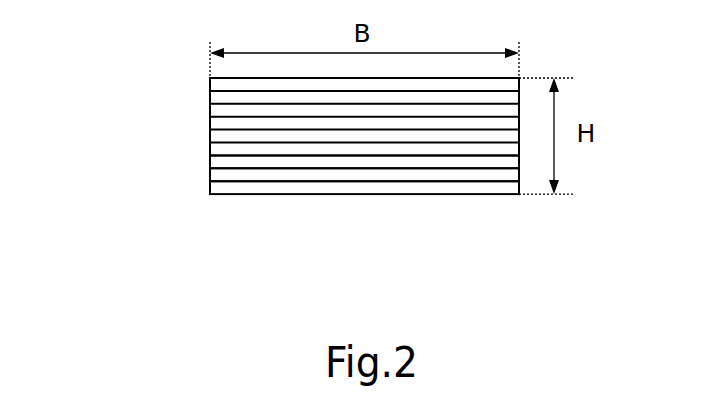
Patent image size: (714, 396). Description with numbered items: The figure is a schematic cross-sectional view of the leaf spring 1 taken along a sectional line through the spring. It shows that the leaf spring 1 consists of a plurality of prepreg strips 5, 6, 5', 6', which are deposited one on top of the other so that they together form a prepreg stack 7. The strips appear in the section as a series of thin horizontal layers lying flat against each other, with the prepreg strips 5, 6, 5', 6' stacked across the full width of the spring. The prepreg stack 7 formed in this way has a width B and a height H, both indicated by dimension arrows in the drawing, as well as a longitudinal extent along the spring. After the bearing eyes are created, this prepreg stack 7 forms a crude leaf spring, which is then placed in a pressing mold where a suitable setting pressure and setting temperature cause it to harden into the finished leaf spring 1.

The leaf spring 1 is at (128, 142).
The prepreg strip 5 is at (364, 226).
The prepreg strip 5' is at (364, 213).
The prepreg strip 6 is at (364, 219).
The prepreg strip 6' is at (364, 177).
The prepreg stack 7 is at (210, 122).